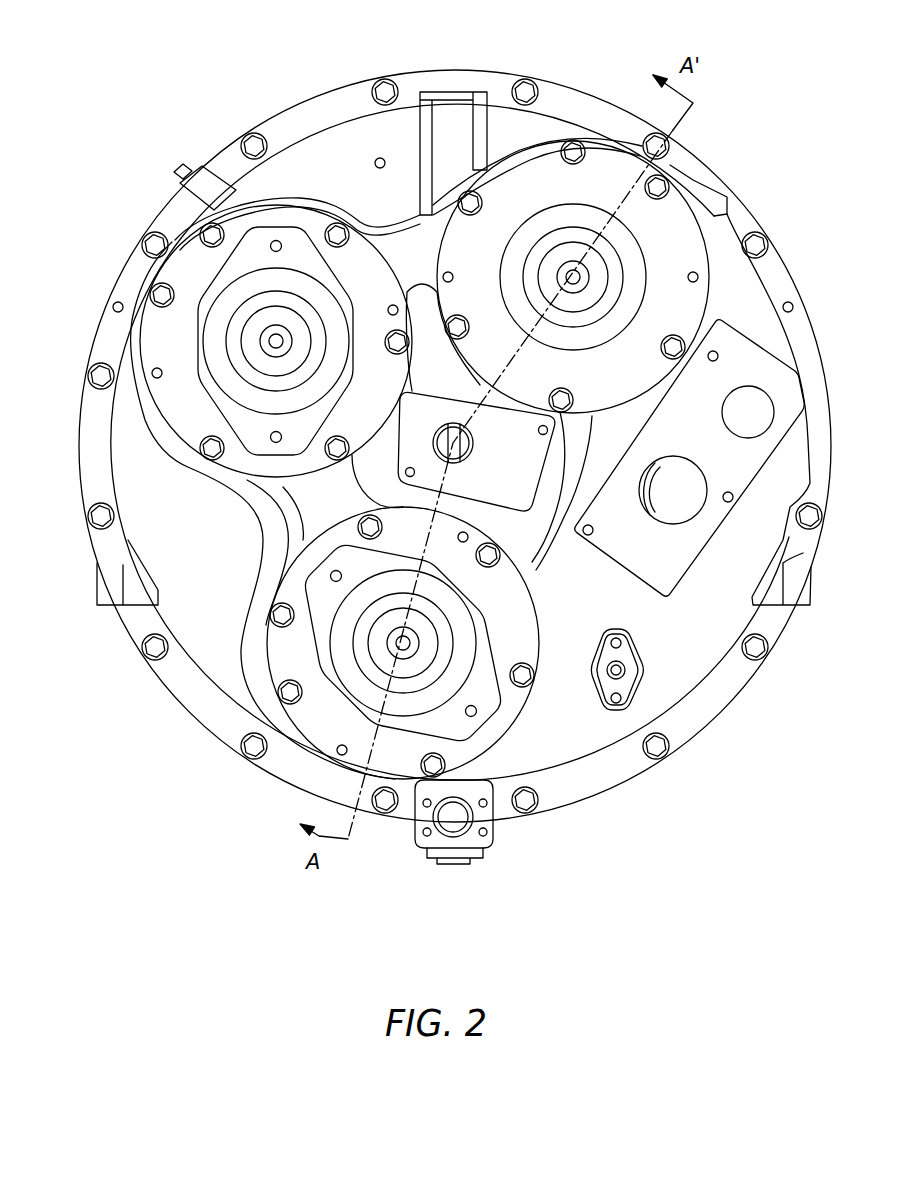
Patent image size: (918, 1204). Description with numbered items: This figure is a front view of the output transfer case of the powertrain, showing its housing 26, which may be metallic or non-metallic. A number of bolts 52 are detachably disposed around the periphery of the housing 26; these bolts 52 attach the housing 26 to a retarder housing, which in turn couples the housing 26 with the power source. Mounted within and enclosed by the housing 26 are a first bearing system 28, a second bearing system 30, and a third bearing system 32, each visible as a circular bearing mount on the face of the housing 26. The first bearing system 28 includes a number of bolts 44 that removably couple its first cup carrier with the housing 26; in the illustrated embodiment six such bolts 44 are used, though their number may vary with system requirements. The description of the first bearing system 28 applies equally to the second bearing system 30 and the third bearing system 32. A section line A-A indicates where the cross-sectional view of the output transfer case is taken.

The housing 26 is at (784, 262).
The first bearing system 28 is at (610, 165).
The second bearing system 30 is at (178, 408).
The third bearing system 32 is at (316, 729).
The bolts 44 is at (668, 181).
The bolts 52 is at (376, 82).